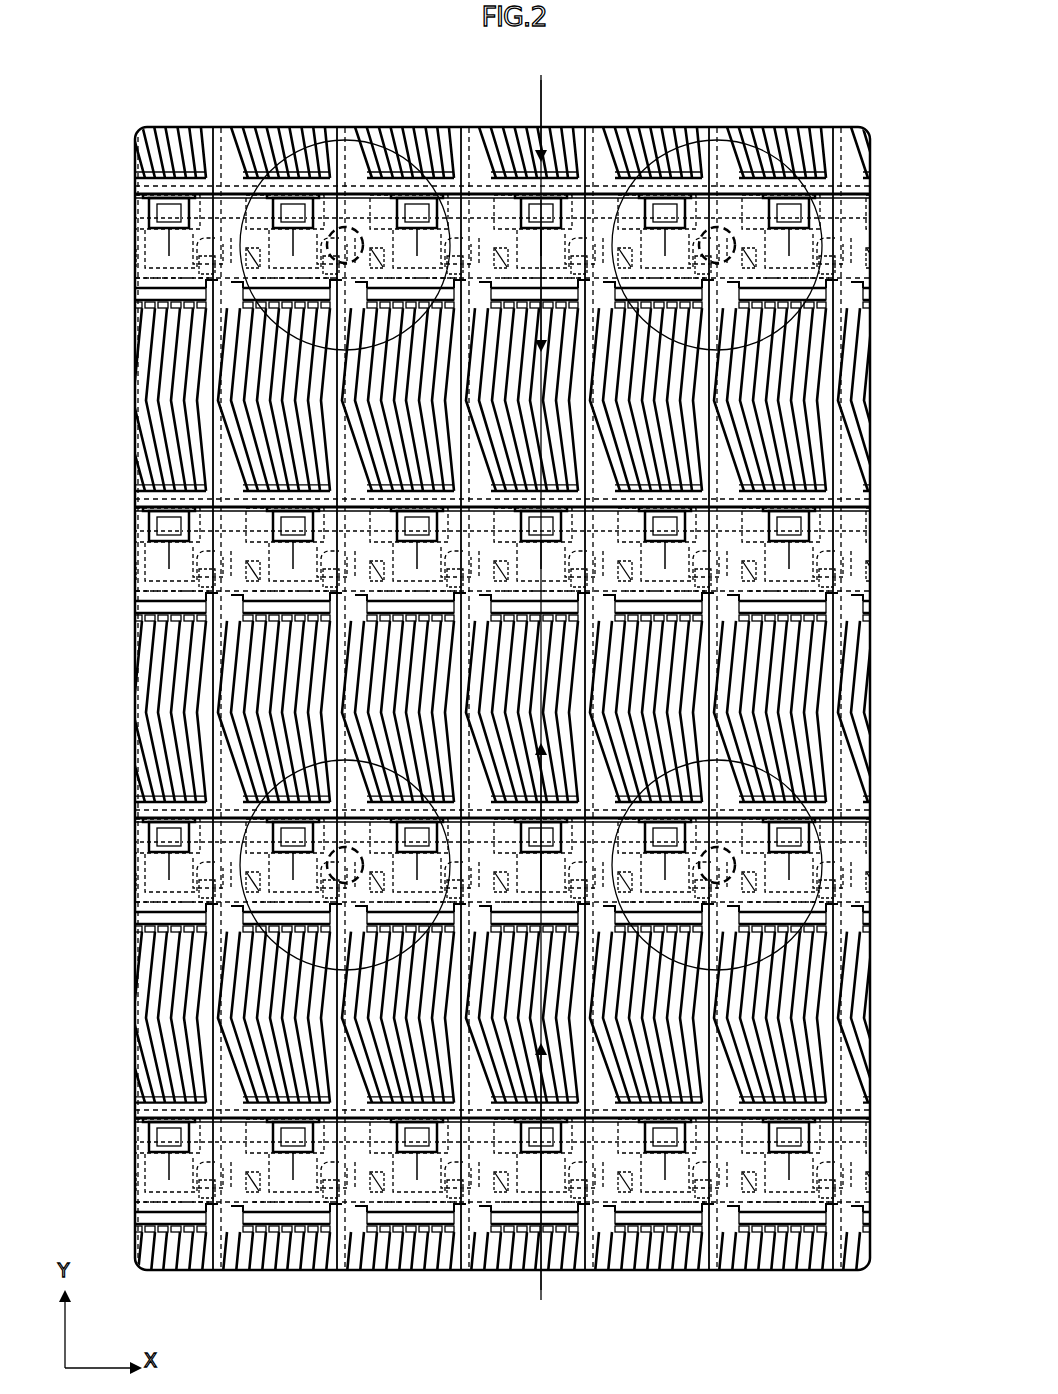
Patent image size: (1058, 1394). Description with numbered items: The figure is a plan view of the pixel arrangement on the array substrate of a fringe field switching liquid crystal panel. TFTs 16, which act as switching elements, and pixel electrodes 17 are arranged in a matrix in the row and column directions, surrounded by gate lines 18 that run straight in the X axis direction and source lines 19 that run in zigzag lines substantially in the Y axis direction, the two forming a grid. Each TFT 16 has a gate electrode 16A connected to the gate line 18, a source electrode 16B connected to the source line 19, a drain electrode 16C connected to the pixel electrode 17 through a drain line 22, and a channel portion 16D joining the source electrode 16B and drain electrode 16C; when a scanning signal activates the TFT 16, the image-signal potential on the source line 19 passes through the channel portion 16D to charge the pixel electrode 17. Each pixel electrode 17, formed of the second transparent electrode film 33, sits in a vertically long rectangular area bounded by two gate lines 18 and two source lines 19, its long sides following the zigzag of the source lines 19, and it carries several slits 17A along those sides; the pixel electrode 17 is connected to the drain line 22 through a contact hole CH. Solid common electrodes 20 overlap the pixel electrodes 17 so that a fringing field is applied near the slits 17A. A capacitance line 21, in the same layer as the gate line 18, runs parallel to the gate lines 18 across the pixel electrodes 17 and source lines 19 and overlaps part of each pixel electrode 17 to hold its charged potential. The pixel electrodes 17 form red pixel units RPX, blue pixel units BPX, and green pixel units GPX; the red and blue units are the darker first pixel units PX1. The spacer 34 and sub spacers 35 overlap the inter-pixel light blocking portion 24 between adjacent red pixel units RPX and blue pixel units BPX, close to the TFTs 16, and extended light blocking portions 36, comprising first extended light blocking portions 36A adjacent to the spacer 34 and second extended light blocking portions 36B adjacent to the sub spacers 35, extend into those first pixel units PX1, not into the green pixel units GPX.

The TFT 16 is at (240, 560).
The gate electrode 16A is at (815, 460).
The source electrode 16B is at (835, 393).
The drain electrode 16C is at (800, 545).
The channel portion 16D is at (835, 625).
The pixel electrode 17 is at (420, 330).
The slit 17A is at (265, 693).
The gate line 18 is at (165, 254).
The source line 19 is at (213, 135).
The common electrode 20 is at (815, 245).
The capacitance line 21 is at (165, 167).
The drain line 22 is at (790, 572).
The inter-pixel light blocking portion 24 is at (235, 1092).
The second transparent electrode film 33 is at (415, 67).
The spacer 34 is at (310, 875).
The sub spacer 35 is at (249, 135).
The extended light blocking portion 36 is at (94, 758).
The first extended light blocking portion 36A is at (320, 735).
The second extended light blocking portion 36B is at (850, 790).
The contact hole CH is at (805, 515).
The first pixel unit PX1 is at (80, 340).
The red pixel unit RPX is at (265, 385).
The blue pixel unit BPX is at (395, 430).
The green pixel unit GPX is at (541, 80).